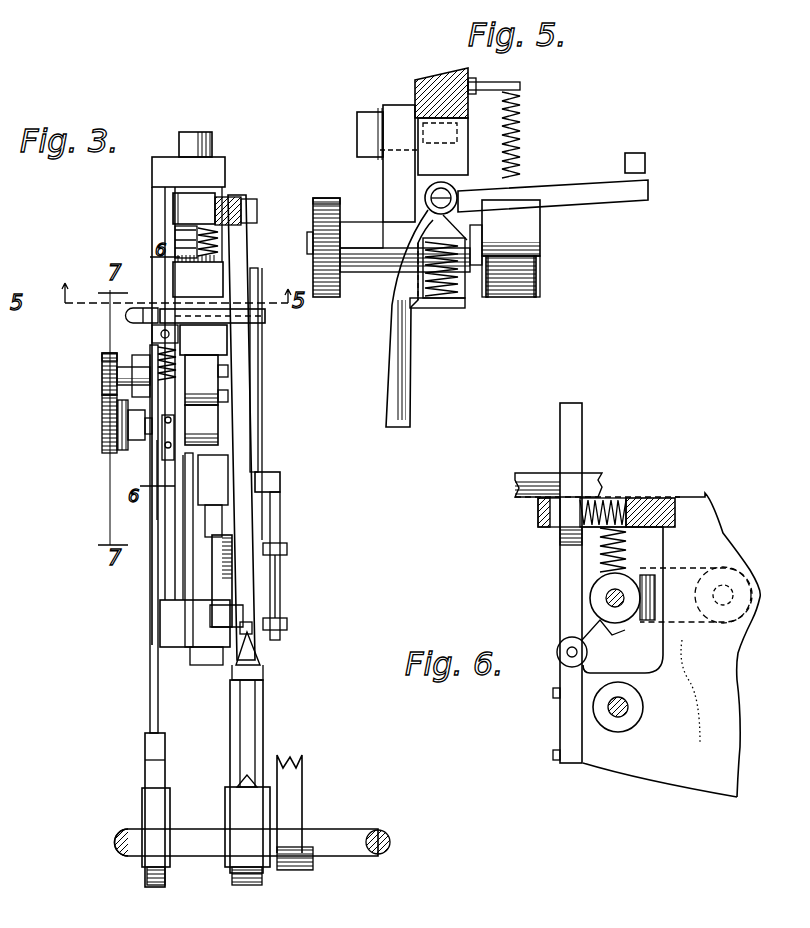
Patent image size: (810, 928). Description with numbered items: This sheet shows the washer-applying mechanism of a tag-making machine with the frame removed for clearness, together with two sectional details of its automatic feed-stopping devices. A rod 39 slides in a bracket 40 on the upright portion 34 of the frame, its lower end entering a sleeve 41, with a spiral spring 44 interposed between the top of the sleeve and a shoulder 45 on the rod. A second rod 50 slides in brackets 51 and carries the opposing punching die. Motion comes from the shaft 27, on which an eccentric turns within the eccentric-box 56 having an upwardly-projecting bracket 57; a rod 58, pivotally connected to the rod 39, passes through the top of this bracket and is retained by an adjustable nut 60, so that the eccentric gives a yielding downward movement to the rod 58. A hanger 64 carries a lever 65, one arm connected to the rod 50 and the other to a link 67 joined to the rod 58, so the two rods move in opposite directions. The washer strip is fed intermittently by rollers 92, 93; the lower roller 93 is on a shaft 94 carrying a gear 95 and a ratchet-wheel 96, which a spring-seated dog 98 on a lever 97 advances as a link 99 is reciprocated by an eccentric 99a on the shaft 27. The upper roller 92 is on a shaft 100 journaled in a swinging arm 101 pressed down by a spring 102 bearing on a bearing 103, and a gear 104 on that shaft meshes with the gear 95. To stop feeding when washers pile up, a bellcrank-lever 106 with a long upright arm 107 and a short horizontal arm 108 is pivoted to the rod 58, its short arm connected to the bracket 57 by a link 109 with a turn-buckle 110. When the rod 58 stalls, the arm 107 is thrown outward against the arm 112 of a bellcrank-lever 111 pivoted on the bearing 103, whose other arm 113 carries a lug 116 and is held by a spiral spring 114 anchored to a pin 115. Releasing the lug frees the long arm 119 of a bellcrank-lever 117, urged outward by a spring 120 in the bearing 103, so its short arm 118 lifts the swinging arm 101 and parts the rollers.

In FIG. 3, the shaft 27 is at (368, 835).
In FIG. 5, the upright portion 34 is at (430, 82).
In FIG. 6, the upright portion 34 is at (683, 743).
In FIG. 3, the rod 39 is at (200, 140).
In FIG. 3, the bracket 40 is at (214, 165).
In FIG. 3, the sleeve 41 is at (233, 226).
In FIG. 3, the spiral spring 44 is at (185, 238).
In FIG. 3, the shoulder 45 is at (188, 206).
In FIG. 3, the rod 50 is at (207, 665).
In FIG. 3, the brackets 51 is at (195, 640).
In FIG. 3, the eccentric-box 56 is at (252, 800).
In FIG. 3, the bracket 57 is at (248, 748).
In FIG. 3, the rod 58 is at (232, 553).
In FIG. 3, the nut 60 is at (255, 665).
In FIG. 3, the hanger 64 is at (168, 500).
In FIG. 3, the lever 65 is at (287, 549).
In FIG. 3, the link 67 is at (215, 592).
In FIG. 3, the roller 92 is at (205, 376).
In FIG. 5, the roller 92 is at (510, 230).
In FIG. 3, the roller 93 is at (203, 428).
In FIG. 6, the shaft 94 is at (610, 708).
In FIG. 3, the gear 95 is at (135, 440).
In FIG. 3, the ratchet-wheel 96 is at (104, 445).
In FIG. 3, the lever 97 is at (152, 455).
In FIG. 3, the spring-seated dog 98 is at (117, 426).
In FIG. 3, the link 99 is at (152, 510).
In FIG. 3, the eccentric 99a is at (158, 840).
In FIG. 3, the shaft 100 is at (102, 374).
In FIG. 5, the shaft 100 is at (340, 205).
In FIG. 6, the shaft 100 is at (606, 598).
In FIG. 3, the swinging arm 101 is at (140, 368).
In FIG. 5, the swinging arm 101 is at (400, 183).
In FIG. 6, the swinging arm 101 is at (645, 587).
In FIG. 6, the spring 102 is at (612, 552).
In FIG. 5, the bearing 103 is at (540, 274).
In FIG. 6, the bearing 103 is at (660, 505).
In FIG. 3, the gear 104 is at (104, 356).
In FIG. 5, the gear 104 is at (326, 198).
In FIG. 3, the bellcrank-lever 106 is at (262, 432).
In FIG. 3, the long upright arm 107 is at (262, 362).
In FIG. 5, the long upright arm 107 is at (640, 157).
In FIG. 3, the short horizontal arm 108 is at (280, 480).
In FIG. 3, the link 109 is at (280, 505).
In FIG. 3, the turn-buckle 110 is at (280, 582).
In FIG. 3, the bellcrank-lever 111 is at (168, 300).
In FIG. 5, the bellcrank-lever 111 is at (440, 212).
In FIG. 3, the arm 112 is at (245, 318).
In FIG. 5, the arm 112 is at (552, 192).
In FIG. 3, the arm 113 is at (138, 315).
In FIG. 5, the arm 113 is at (405, 405).
In FIG. 6, the arm 113 is at (520, 490).
In FIG. 5, the spiral spring 114 is at (518, 148).
In FIG. 5, the pin 115 is at (492, 84).
In FIG. 3, the lug 116 is at (170, 334).
In FIG. 5, the lug 116 is at (428, 308).
In FIG. 6, the lug 116 is at (552, 476).
In FIG. 3, the bellcrank-lever 117 is at (108, 393).
In FIG. 6, the bellcrank-lever 117 is at (560, 535).
In FIG. 6, the short arm 118 is at (600, 628).
In FIG. 3, the long arm 119 is at (158, 290).
In FIG. 5, the long arm 119 is at (440, 290).
In FIG. 6, the long arm 119 is at (568, 412).
In FIG. 3, the spring 120 is at (167, 363).
In FIG. 5, the spring 120 is at (448, 272).
In FIG. 6, the spring 120 is at (608, 497).